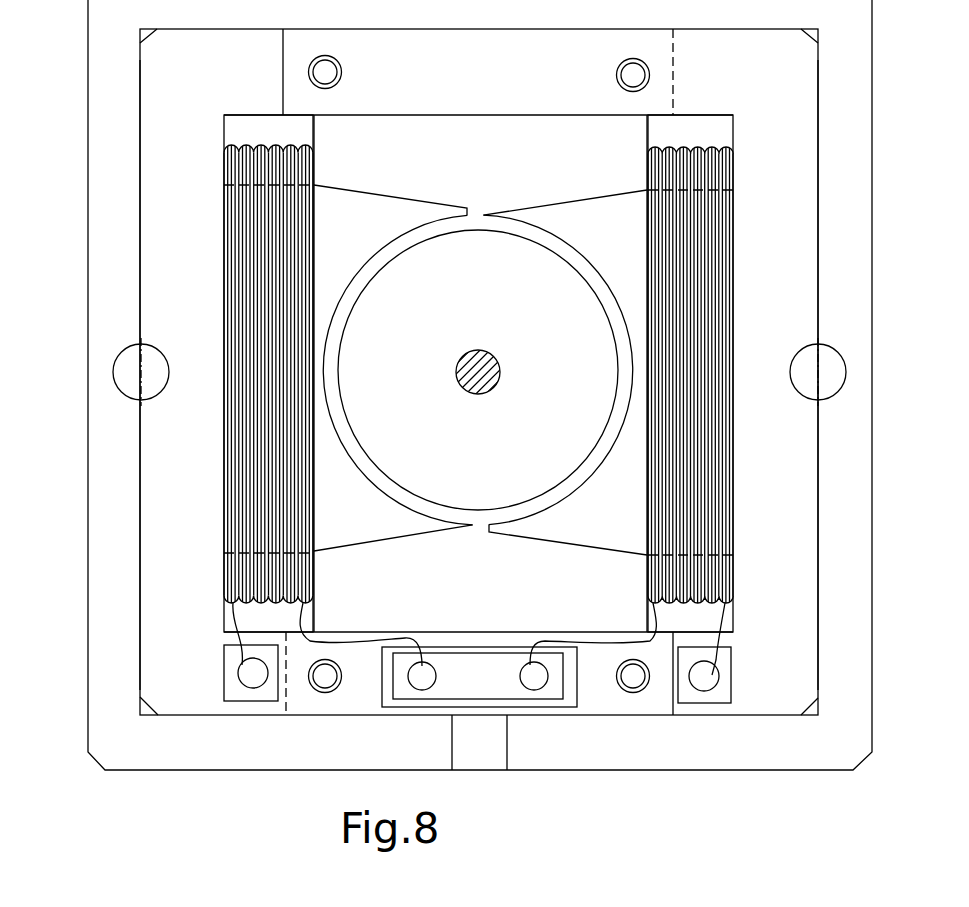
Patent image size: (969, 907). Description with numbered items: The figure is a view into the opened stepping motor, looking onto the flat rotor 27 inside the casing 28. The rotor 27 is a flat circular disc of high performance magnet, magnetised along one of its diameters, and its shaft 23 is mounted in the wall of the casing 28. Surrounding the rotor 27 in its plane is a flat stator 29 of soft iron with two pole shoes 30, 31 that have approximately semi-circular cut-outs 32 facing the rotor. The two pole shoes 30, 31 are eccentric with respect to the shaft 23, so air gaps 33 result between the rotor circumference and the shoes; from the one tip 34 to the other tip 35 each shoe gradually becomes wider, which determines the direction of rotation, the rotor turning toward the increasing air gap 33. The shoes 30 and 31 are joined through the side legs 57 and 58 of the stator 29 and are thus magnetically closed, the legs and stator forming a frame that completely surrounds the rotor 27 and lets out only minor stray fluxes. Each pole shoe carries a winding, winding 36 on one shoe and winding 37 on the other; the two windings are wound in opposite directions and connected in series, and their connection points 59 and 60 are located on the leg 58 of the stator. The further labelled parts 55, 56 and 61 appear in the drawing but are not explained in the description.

The shaft 23 is at (490, 358).
The rotor 27 is at (392, 342).
The casing 28 is at (120, 441).
The stator 29 is at (178, 262).
The pole shoe 30 is at (330, 235).
The pole shoe 31 is at (601, 268).
The cut-outs 32 is at (407, 226).
The air gaps 33 is at (449, 227).
The tip 34 is at (490, 221).
The tip 35 is at (470, 208).
The winding 36 is at (243, 145).
The winding 37 is at (658, 146).
The left frame member 55 is at (180, 141).
The right frame member 56 is at (790, 144).
The side leg 57 is at (494, 100).
The side leg 58 is at (343, 708).
The connection point 59 is at (238, 691).
The connection point 60 is at (567, 700).
The right terminal pad 61 is at (718, 703).